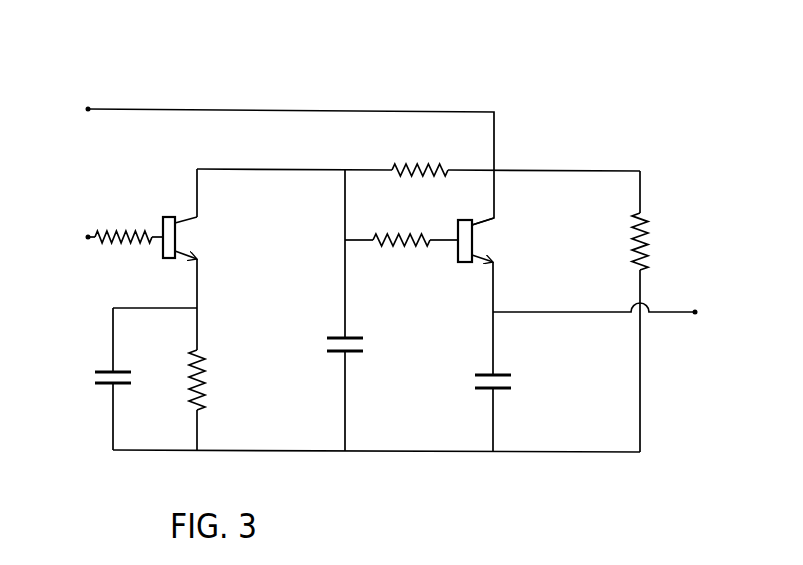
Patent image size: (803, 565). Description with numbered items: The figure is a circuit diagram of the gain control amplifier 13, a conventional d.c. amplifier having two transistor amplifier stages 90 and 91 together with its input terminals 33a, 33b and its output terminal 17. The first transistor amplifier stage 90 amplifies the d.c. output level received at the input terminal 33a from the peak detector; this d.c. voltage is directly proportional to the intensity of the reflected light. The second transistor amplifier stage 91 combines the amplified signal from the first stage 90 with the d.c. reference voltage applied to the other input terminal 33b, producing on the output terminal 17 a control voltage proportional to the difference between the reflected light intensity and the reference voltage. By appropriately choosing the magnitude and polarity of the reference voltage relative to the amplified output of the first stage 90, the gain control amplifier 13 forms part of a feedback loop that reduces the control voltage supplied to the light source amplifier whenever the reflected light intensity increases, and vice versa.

The gain control amplifier 13 is at (492, 53).
The input terminal 33a is at (88, 237).
The input terminal 33b is at (88, 109).
The first transistor amplifier stage 90 is at (158, 207).
The second transistor amplifier stage 91 is at (455, 208).
The output terminal 17 is at (695, 312).